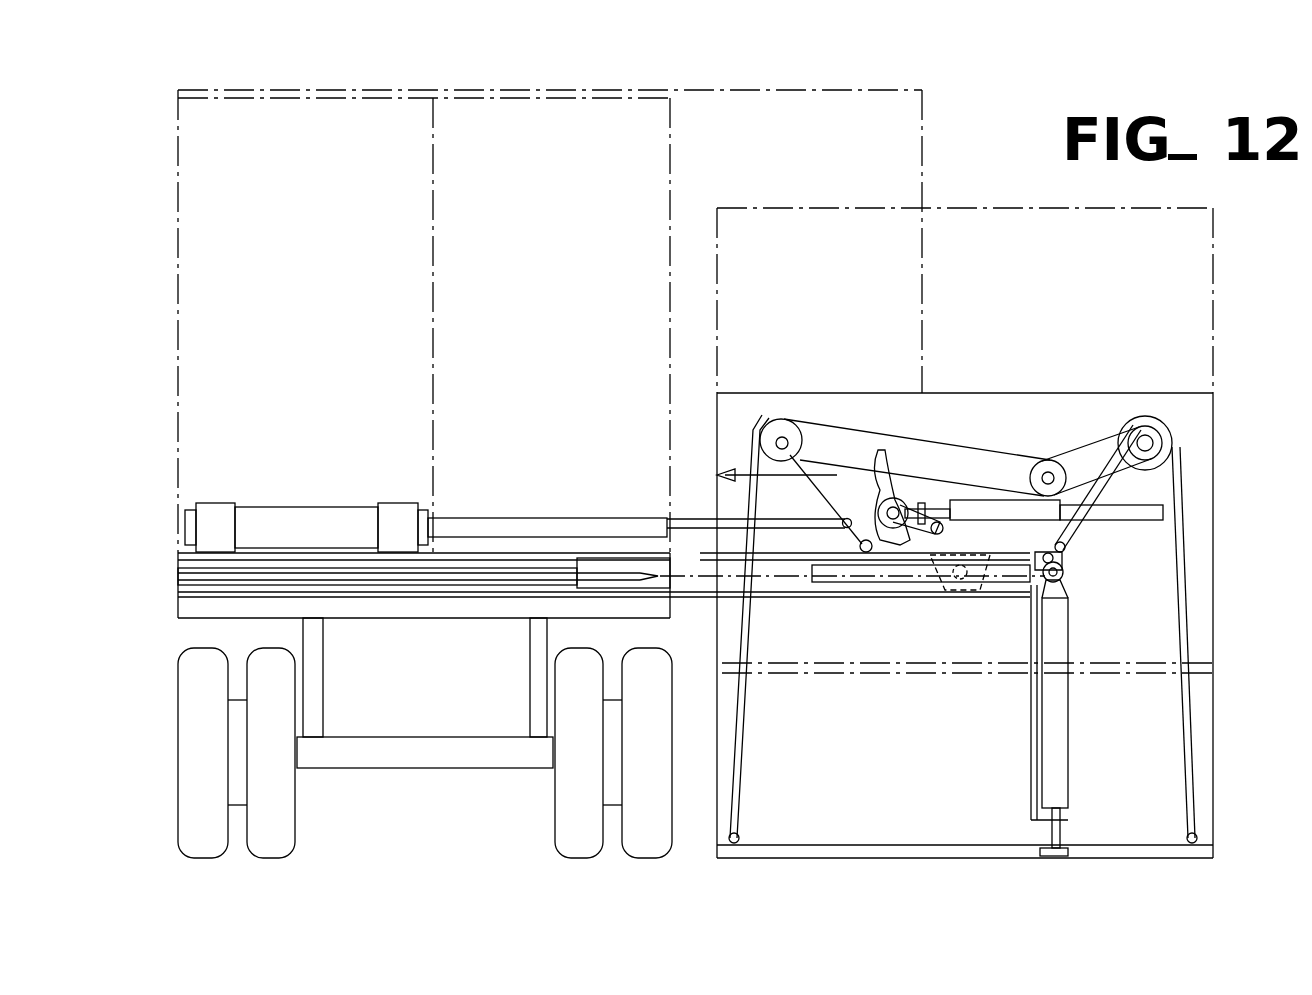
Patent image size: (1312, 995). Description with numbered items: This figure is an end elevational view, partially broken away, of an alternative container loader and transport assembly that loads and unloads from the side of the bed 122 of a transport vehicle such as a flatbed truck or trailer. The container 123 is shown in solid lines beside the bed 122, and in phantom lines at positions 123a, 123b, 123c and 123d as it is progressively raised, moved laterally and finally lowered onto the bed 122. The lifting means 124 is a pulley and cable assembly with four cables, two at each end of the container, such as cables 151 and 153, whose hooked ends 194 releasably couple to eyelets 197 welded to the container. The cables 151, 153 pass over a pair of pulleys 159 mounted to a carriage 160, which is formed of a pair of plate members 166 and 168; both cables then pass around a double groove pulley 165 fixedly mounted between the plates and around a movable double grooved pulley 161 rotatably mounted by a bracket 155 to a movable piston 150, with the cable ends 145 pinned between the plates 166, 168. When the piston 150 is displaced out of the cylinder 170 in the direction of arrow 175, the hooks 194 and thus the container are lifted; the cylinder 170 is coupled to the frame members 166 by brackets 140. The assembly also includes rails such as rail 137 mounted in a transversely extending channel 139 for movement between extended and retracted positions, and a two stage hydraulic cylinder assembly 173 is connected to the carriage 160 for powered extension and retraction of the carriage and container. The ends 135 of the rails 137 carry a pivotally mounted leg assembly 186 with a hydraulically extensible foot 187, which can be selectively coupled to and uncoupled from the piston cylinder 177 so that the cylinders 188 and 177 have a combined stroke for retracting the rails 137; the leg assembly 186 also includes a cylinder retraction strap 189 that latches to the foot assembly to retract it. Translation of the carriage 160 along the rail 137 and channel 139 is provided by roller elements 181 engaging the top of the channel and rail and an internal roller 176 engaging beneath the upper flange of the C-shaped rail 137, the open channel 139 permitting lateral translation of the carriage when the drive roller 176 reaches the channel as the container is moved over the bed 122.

The bed 122 is at (460, 620).
The container 123 is at (1213, 650).
The container (phantom position) 123a is at (1213, 325).
The container (phantom position) 123b is at (433, 282).
The container (phantom position) 123c is at (648, 100).
The container (phantom position) 123d is at (498, 98).
The lifting means 124 is at (1183, 427).
The ends of the rails 135 is at (1070, 575).
The rail 137 is at (797, 590).
The channel 139 is at (255, 510).
The brackets 140 is at (1185, 500).
The cable ends 145 is at (957, 536).
The piston 150 is at (934, 510).
The cable 151 is at (852, 430).
The cable 153 is at (1092, 450).
The bracket 155 is at (908, 522).
The pulleys 159 is at (1145, 425).
The carriage 160 is at (783, 490).
The movable double grooved pulley 161 is at (898, 500).
The double groove pulley 165 is at (1040, 462).
The plate member 166 is at (828, 425).
The plate member 168 is at (935, 470).
The cylinder 170 is at (1165, 521).
The two stage hydraulic cylinder assembly 173 is at (300, 507).
The arrow 175 is at (795, 412).
The internal roller 176 is at (1012, 560).
The piston cylinder 177 is at (372, 586).
The roller elements 181 is at (858, 538).
The leg assembly 186 is at (1015, 772).
The extensible foot 187 is at (1065, 826).
The cylinder 188 is at (1068, 725).
The cylinder retraction strap 189 is at (1030, 640).
The hooked ends 194 is at (1188, 836).
The eyelets 197 is at (1220, 850).